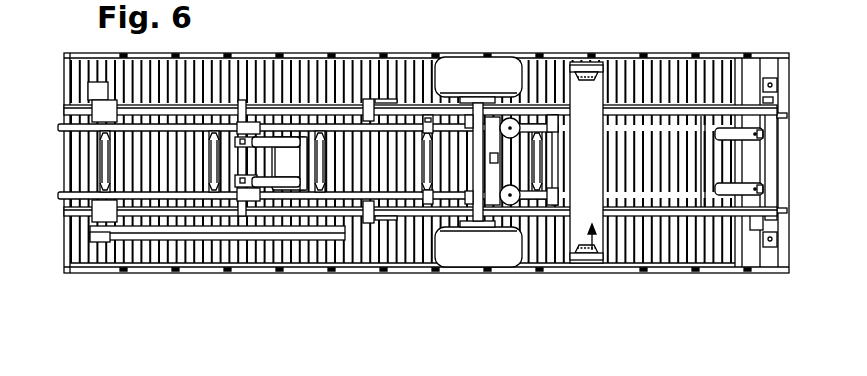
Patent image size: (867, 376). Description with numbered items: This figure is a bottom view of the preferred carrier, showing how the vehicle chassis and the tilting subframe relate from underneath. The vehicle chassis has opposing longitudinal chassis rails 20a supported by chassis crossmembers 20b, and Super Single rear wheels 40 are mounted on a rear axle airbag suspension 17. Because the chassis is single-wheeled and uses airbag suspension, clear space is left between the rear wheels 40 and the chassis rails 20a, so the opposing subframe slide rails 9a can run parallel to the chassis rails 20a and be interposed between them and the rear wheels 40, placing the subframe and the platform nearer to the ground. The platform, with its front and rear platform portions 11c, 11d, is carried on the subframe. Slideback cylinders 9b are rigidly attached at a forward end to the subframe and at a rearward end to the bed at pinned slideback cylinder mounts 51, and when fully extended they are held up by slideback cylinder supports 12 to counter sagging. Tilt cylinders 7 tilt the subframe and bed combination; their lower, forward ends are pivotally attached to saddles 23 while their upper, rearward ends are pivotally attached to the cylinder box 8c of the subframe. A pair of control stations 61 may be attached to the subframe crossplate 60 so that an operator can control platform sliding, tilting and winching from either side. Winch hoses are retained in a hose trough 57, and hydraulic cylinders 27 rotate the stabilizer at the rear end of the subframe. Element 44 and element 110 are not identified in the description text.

The tilt cylinders 7 is at (289, 143).
The cylinder box 8c is at (293, 162).
The subframe slide rails 9a is at (352, 216).
The slideback cylinders 9b is at (343, 104).
The front platform portion 11c is at (73, 160).
The rear platform portion 11d is at (773, 164).
The slideback cylinder supports 12 is at (364, 222).
The rear axle airbag suspension 17 is at (512, 119).
The chassis rails 20a is at (60, 128).
The chassis crossmembers 20b is at (213, 168).
The saddles 23 is at (242, 158).
The hydraulic cylinders 27 is at (738, 135).
The rear wheels 40 is at (497, 74).
The support 44 is at (557, 206).
The slideback cylinder mounts 51 is at (392, 99).
The hose trough 57 is at (225, 240).
The subframe crossplate 60 is at (592, 252).
The control stations 61 is at (601, 66).
The floor 110 is at (534, 268).